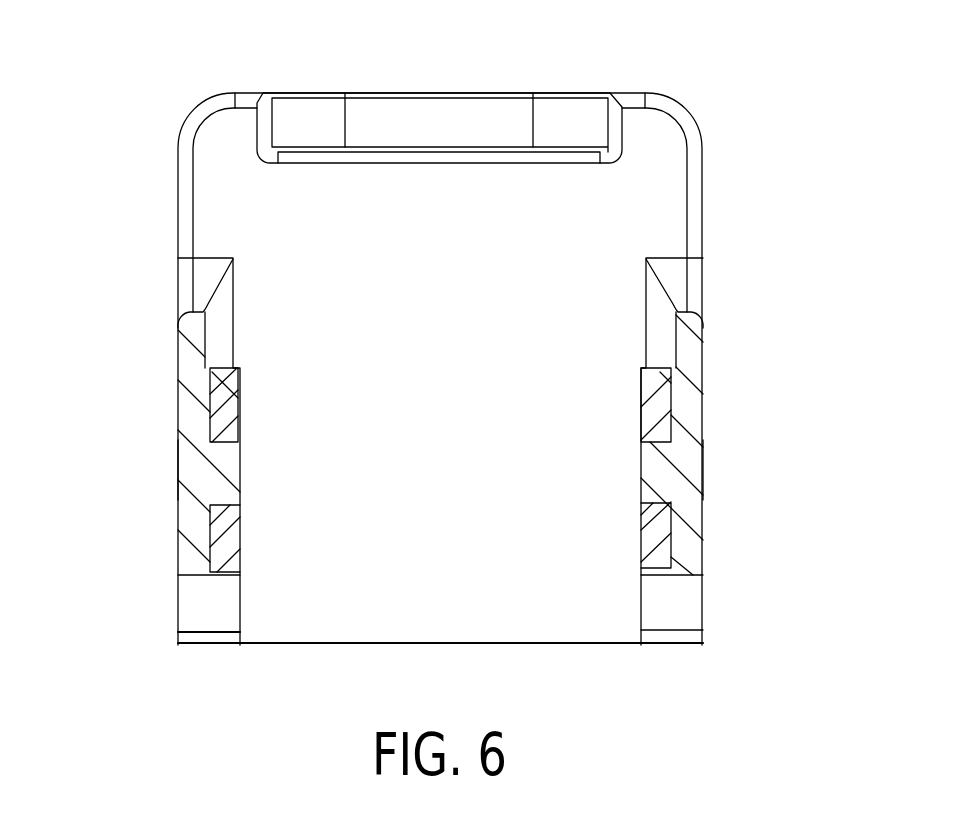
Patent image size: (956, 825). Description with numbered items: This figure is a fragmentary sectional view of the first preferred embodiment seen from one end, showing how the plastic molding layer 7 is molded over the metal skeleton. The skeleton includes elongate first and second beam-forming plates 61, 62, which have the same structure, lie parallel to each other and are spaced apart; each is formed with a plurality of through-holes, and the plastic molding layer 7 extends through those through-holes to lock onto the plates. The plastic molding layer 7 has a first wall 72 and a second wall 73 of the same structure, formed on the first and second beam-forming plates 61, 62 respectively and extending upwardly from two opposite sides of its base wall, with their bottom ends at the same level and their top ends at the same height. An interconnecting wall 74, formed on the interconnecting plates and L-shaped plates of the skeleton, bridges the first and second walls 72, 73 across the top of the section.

The plastic molding layer 7 is at (178, 168).
The interconnecting wall 74 is at (658, 137).
The second wall 73 is at (178, 515).
The first wall 72 is at (703, 515).
The second beam-forming plate 62 is at (227, 393).
The first beam-forming plate 61 is at (657, 407).